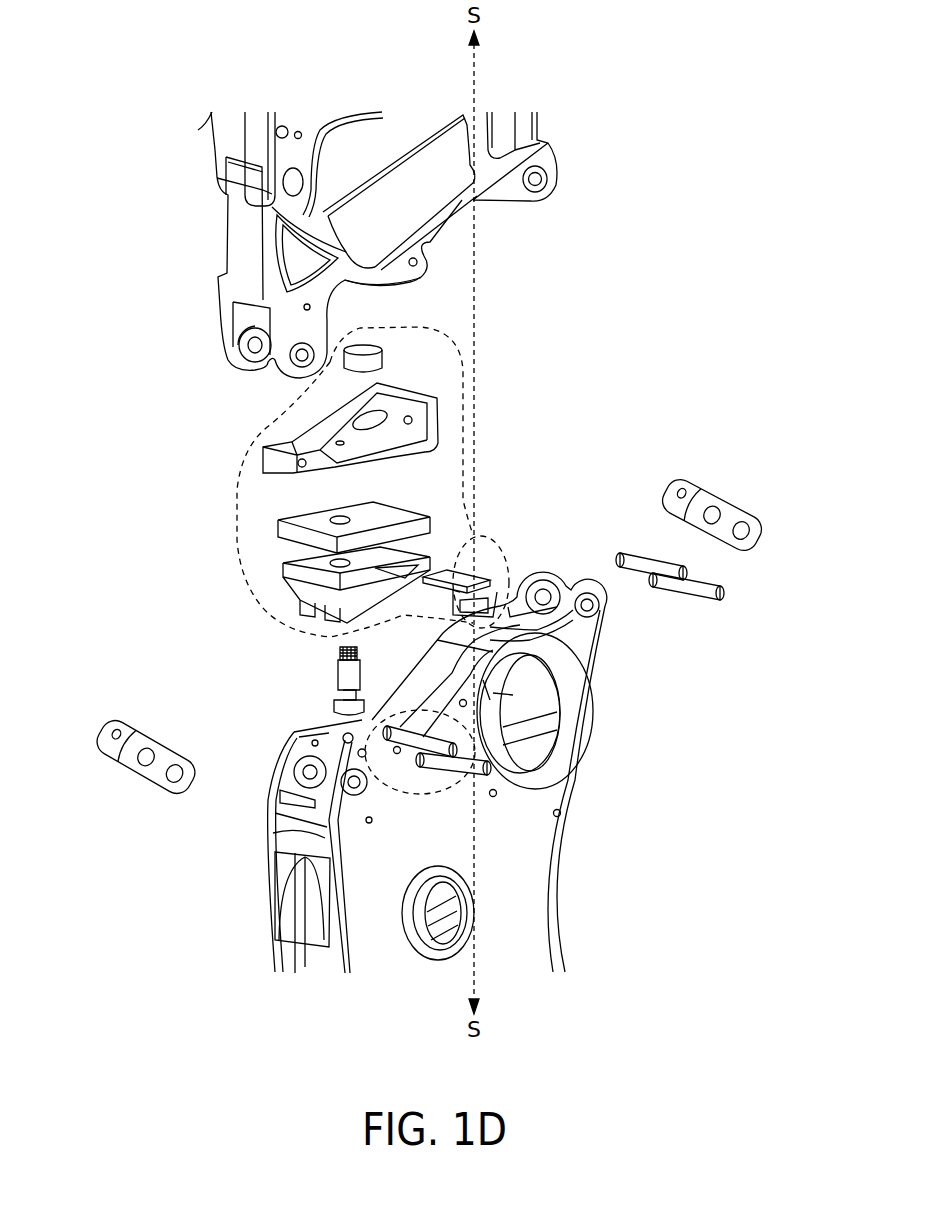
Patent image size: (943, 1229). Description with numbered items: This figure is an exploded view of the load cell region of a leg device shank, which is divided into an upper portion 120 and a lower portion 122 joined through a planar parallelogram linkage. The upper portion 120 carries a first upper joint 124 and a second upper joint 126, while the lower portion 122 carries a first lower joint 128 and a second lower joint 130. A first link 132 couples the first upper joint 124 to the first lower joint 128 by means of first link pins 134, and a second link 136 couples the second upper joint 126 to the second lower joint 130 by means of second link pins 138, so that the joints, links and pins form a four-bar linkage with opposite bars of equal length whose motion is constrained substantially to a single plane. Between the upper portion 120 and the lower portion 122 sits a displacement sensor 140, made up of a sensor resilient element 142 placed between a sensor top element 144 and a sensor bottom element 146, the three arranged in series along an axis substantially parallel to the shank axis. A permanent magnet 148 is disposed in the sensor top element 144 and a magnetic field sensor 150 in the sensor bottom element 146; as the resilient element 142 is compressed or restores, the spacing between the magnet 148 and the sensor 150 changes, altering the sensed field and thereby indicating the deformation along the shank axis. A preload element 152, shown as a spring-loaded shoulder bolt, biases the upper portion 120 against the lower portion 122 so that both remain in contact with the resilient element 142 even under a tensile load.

The upper portion 120 is at (380, 245).
The lower portion 122 is at (444, 772).
The first upper joint 124 is at (546, 160).
The second upper joint 126 is at (236, 350).
The first lower joint 128 is at (603, 608).
The second lower joint 130 is at (290, 770).
The first link 132 is at (750, 510).
The first link pins 134 is at (705, 600).
The second link 136 is at (120, 775).
The second link pins 138 is at (350, 733).
The displacement sensor 140 is at (154, 462).
The sensor resilient element 142 is at (280, 527).
The sensor top element 144 is at (265, 455).
The sensor bottom element 146 is at (285, 576).
The permanent magnet 148 is at (385, 354).
The magnetic field sensor 150 is at (478, 565).
The preload element 152 is at (348, 675).